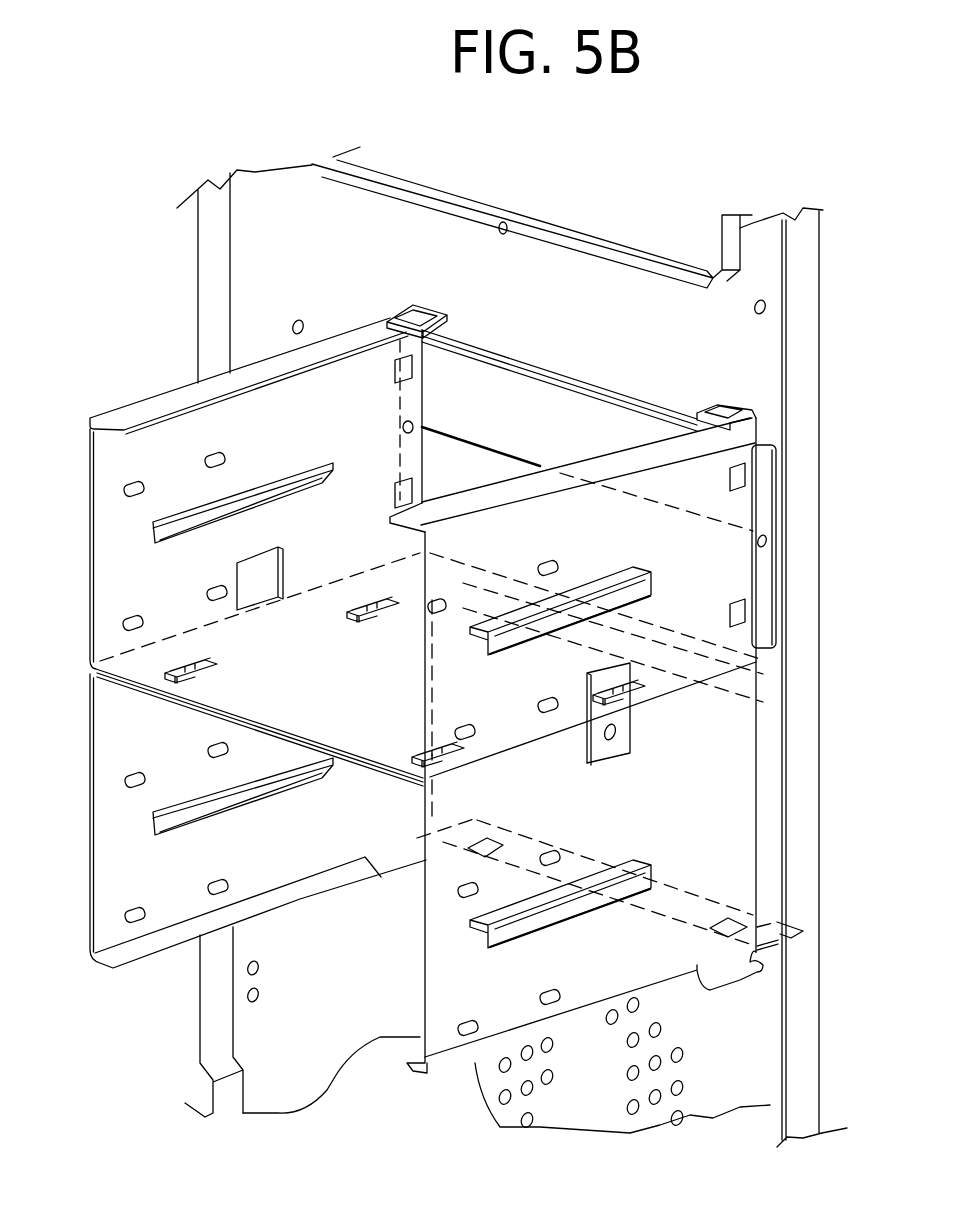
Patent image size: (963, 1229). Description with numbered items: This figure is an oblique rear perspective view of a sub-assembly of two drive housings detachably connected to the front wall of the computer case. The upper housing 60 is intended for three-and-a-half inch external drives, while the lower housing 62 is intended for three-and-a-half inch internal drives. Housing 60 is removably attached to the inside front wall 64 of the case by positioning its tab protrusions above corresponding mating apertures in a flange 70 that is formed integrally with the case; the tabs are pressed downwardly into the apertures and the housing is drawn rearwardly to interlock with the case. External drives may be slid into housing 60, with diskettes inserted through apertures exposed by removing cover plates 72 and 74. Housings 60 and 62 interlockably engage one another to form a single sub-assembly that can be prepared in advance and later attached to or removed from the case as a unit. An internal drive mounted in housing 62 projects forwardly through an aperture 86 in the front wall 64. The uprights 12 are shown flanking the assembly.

The upright post 12 is at (212, 257).
The housing 60 is at (108, 546).
The housing 62 is at (168, 911).
The inside front wall 64 is at (545, 316).
The flange 70 is at (586, 366).
The cover plate 72 is at (524, 411).
The cover plate 74 is at (470, 482).
The aperture 86 is at (657, 820).